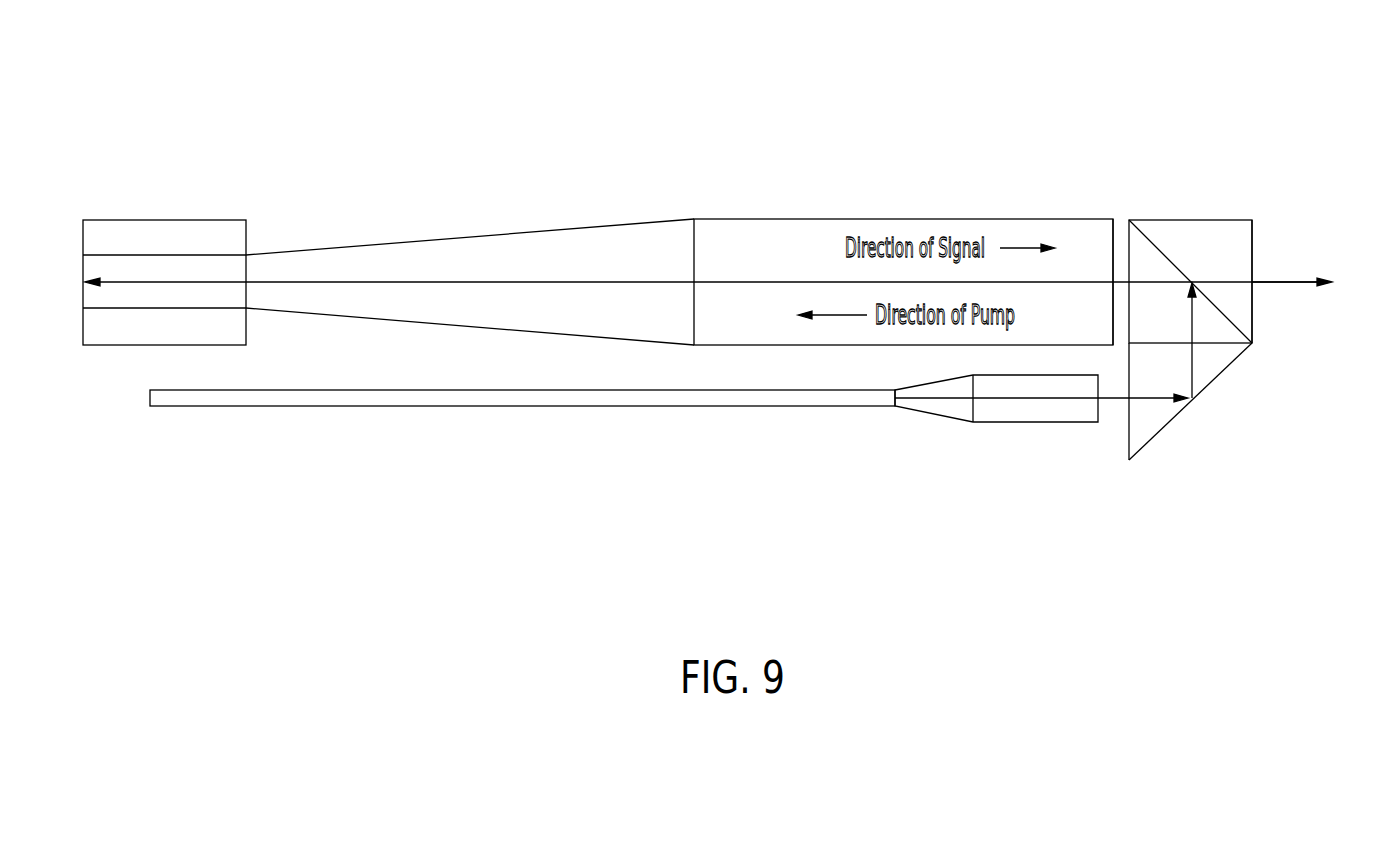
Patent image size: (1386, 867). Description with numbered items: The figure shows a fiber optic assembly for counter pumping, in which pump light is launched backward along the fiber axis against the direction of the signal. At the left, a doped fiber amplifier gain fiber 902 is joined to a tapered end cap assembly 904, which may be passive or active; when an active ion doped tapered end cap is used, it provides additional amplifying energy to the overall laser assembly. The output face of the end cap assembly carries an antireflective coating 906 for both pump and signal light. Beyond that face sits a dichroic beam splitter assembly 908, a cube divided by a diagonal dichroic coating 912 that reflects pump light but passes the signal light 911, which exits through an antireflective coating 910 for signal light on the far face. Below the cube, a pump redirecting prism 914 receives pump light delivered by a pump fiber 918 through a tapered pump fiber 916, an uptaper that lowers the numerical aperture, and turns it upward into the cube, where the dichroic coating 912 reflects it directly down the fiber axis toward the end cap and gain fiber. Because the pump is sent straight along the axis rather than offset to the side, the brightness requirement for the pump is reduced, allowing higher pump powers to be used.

The doped fiber amplifier gain fiber 902 is at (199, 235).
The tapered end cap assembly 904 is at (1113, 203).
The antireflective coating for pump and signal 906 is at (1119, 226).
The dichroic beam splitter assembly 908 is at (1255, 203).
The antireflective coating for signal 910 is at (1266, 310).
The signal light 911 is at (1338, 186).
The dichroic coating 912 is at (1243, 334).
The pump redirecting prism 914 is at (1147, 420).
The tapered pump fiber 916 is at (1098, 437).
The pump fiber 918 is at (655, 397).